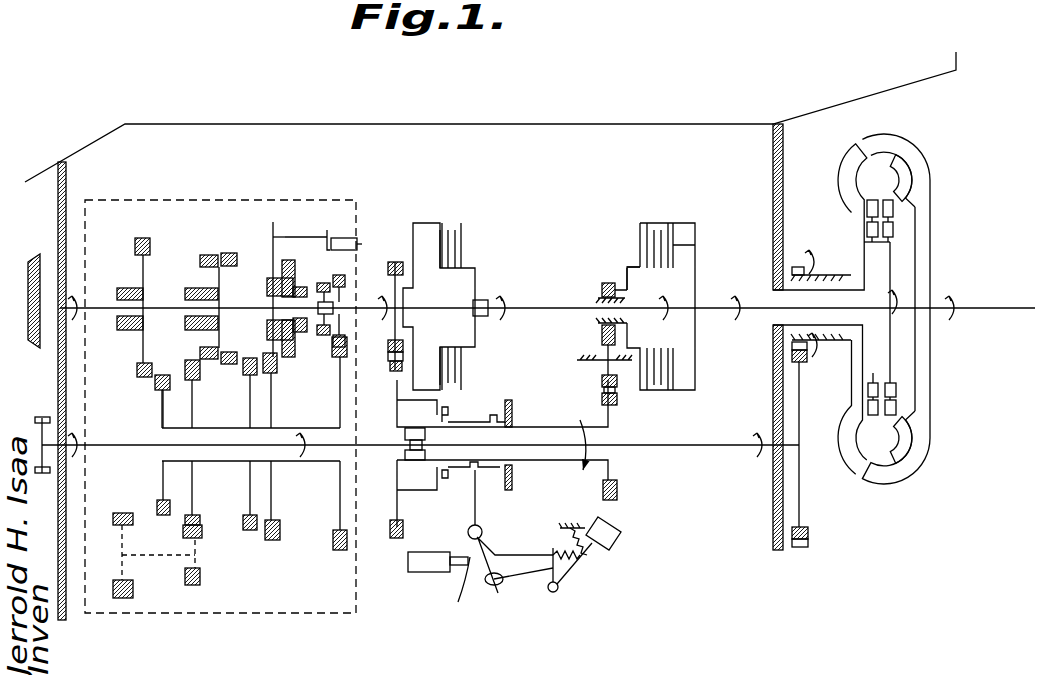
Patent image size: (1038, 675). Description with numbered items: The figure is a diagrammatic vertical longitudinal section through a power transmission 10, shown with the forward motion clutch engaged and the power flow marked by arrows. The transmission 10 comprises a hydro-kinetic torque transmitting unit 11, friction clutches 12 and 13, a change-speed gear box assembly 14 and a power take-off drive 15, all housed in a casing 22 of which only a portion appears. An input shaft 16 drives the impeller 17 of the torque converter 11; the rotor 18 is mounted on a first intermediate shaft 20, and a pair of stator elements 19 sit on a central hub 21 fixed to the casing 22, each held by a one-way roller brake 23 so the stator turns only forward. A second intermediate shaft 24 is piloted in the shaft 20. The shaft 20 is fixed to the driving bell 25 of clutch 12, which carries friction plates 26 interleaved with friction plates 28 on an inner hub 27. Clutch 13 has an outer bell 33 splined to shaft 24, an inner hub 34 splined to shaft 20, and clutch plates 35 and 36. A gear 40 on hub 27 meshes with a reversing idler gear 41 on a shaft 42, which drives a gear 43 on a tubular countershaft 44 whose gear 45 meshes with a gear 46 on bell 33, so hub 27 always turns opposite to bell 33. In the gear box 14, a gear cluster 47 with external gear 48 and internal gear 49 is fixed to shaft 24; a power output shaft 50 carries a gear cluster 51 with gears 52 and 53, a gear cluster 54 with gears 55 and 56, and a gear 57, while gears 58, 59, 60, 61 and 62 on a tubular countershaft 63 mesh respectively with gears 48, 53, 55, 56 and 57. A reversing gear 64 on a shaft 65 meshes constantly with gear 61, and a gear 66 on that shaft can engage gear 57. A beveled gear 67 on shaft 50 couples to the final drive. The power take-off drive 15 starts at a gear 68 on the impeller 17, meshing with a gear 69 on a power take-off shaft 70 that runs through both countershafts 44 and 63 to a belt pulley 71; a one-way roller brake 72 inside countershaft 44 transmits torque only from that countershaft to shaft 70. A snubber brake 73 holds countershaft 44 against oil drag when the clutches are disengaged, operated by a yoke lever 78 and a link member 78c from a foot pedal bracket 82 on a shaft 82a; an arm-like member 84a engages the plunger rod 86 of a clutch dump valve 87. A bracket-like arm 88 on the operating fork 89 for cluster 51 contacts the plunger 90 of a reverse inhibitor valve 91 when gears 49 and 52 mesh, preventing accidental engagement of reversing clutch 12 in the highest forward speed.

The power transmission 10 is at (707, 108).
The hydro-kinetic torque transmitting unit 11 is at (916, 136).
The friction clutch 12 is at (622, 210).
The friction clutch 13 is at (477, 208).
The change-speed gear box transmission assembly 14 is at (238, 168).
The power take-off drive mechanism 15 is at (671, 458).
The input shaft 16 is at (1010, 312).
The impeller 17 is at (845, 166).
The rotor 18 is at (912, 168).
The stator elements 19 is at (893, 210).
The first intermediate shaft 20 is at (867, 306).
The central hub 21 is at (865, 271).
The casing 22 is at (773, 160).
The one-way roller brake 23 is at (894, 230).
The second intermediate shaft 24 is at (448, 300).
The driving bell 25 is at (693, 222).
The friction plates 26 is at (695, 245).
The inner hub 27 is at (633, 276).
The friction plates 28 is at (627, 262).
The outer bell 33 is at (440, 225).
The inner hub 34 is at (478, 270).
The clutch plates 35 is at (455, 235).
The clutch plates 36 is at (462, 258).
The gear 40 is at (600, 291).
The gear 41 is at (602, 338).
The shaft 42 is at (600, 368).
The gear 43 is at (616, 395).
The tubular countershaft 44 is at (556, 422).
The gear 45 is at (392, 360).
The gear 46 is at (398, 262).
The gear cluster 47 is at (327, 332).
The external gear 48 is at (339, 275).
The internal gear 49 is at (322, 283).
The power output shaft 50 is at (232, 307).
The gear cluster 51 is at (272, 276).
The gear 52 is at (305, 287).
The gear 53 is at (288, 262).
The gear cluster 54 is at (197, 262).
The gear 55 is at (232, 253).
The gear 56 is at (213, 255).
The gear 57 is at (143, 238).
The gear 58 is at (333, 352).
The gear 59 is at (275, 372).
The gear 60 is at (250, 373).
The gear 61 is at (207, 376).
The gear 62 is at (158, 384).
The tubular countershaft 63 is at (215, 428).
The reversing gear 64 is at (200, 580).
The shaft 65 is at (158, 565).
The gear 66 is at (125, 513).
The beveled gear 67 is at (30, 292).
The gear 68 is at (803, 267).
The gear 69 is at (808, 362).
The power take-off shaft 70 is at (742, 444).
The belt pulley 71 is at (42, 417).
The one-way roller brake 72 is at (420, 462).
The snubber brake 73 is at (455, 490).
The operating lever 78 is at (476, 510).
The link member 78c is at (520, 585).
The foot pedal bracket member 82 is at (620, 532).
The shaft 82a is at (558, 588).
The arm-like member 84a is at (466, 590).
The plunger rod 86 is at (458, 567).
The clutch dump valve 87 is at (420, 565).
The bracket-like arm 88 is at (293, 237).
The gear speed-ratio operating fork 89 is at (273, 237).
The plunger 90 is at (333, 238).
The reverse inhibitor valve 91 is at (358, 240).